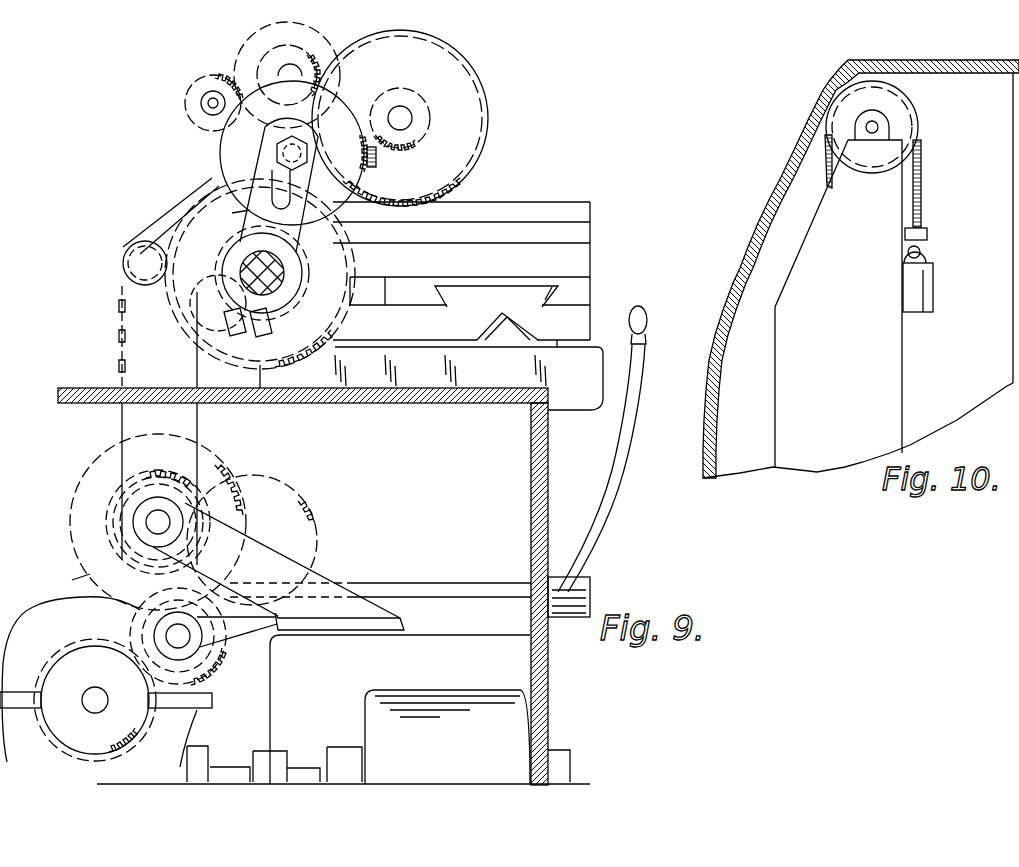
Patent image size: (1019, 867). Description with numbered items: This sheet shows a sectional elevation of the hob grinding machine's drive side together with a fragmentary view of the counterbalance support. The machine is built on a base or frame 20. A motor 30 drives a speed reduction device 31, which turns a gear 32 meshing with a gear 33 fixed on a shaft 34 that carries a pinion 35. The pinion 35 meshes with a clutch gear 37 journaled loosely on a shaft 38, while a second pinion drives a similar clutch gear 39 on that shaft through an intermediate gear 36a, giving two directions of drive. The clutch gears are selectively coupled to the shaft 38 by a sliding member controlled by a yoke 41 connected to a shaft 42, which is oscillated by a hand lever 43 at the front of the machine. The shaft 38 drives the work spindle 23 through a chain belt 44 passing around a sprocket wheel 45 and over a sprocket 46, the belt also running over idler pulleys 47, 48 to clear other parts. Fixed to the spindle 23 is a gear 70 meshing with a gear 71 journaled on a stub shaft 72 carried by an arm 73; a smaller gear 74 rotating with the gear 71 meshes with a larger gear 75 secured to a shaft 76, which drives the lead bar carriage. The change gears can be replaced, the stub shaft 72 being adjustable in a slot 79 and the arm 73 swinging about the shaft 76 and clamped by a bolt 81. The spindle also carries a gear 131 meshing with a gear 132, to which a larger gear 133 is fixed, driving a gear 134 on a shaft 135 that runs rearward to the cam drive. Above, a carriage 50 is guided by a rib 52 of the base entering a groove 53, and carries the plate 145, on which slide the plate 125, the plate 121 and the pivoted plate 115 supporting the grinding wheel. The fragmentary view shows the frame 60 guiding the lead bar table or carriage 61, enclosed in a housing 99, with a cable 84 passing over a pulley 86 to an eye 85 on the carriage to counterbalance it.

In FIG. 9, the gear 133 is at (280, 27).
In FIG. 9, the gear 132 is at (312, 55).
In FIG. 9, the gear 134 is at (213, 75).
In FIG. 9, the shaft 135 is at (203, 105).
In FIG. 9, the sprocket 46 is at (400, 118).
In FIG. 9, the work shaft or spindle 23 is at (410, 118).
In FIG. 9, the gear 70 is at (420, 146).
In FIG. 9, the gear 71 is at (378, 166).
In FIG. 9, the gear 131 is at (472, 183).
In FIG. 9, the gear 74 is at (322, 160).
In FIG. 9, the stub shaft 72 is at (207, 168).
In FIG. 9, the arm 73 is at (250, 225).
In FIG. 9, the slot 79 is at (226, 214).
In FIG. 9, the shaft 76 is at (300, 268).
In FIG. 9, the gear 75 is at (358, 261).
In FIG. 9, the bolt 81 is at (223, 327).
In FIG. 9, the idler pulley 48 is at (200, 300).
In FIG. 9, the idler pulley 47 is at (124, 263).
In FIG. 9, the chain belt 44 is at (200, 420).
In FIG. 9, the base or frame 20 is at (549, 446).
In FIG. 9, the plate 115 is at (591, 205).
In FIG. 9, the plate 121 is at (593, 235).
In FIG. 9, the plate 125 is at (592, 262).
In FIG. 9, the plate 145 is at (578, 292).
In FIG. 9, the carriage 50 is at (503, 309).
In FIG. 9, the groove 53 is at (483, 322).
In FIG. 9, the rib 52 is at (508, 345).
In FIG. 9, the hand lever 43 is at (626, 464).
In FIG. 9, the shaft 42 is at (447, 585).
In FIG. 9, the intermediate gear 36a is at (286, 512).
In FIG. 9, the shaft 38 is at (150, 520).
In FIG. 9, the clutch gear 39 is at (110, 492).
In FIG. 9, the sprocket wheel 45 is at (176, 470).
In FIG. 9, the clutch gear 37 is at (78, 540).
In FIG. 9, the yoke 41 is at (69, 579).
In FIG. 9, the shaft 34 is at (170, 636).
In FIG. 9, the pinion 35 is at (212, 660).
In FIG. 9, the gear 33 is at (240, 667).
In FIG. 9, the speed reduction device 31 is at (71, 679).
In FIG. 9, the gear 32 is at (138, 728).
In FIG. 9, the motor 30 is at (447, 737).
In FIG. 10, the housing 99 is at (793, 150).
In FIG. 10, the frame 60 is at (904, 355).
In FIG. 10, the pulley 86 is at (905, 118).
In FIG. 10, the cable 84 is at (922, 176).
In FIG. 10, the eye 85 is at (924, 256).
In FIG. 10, the table or carriage 61 is at (934, 287).